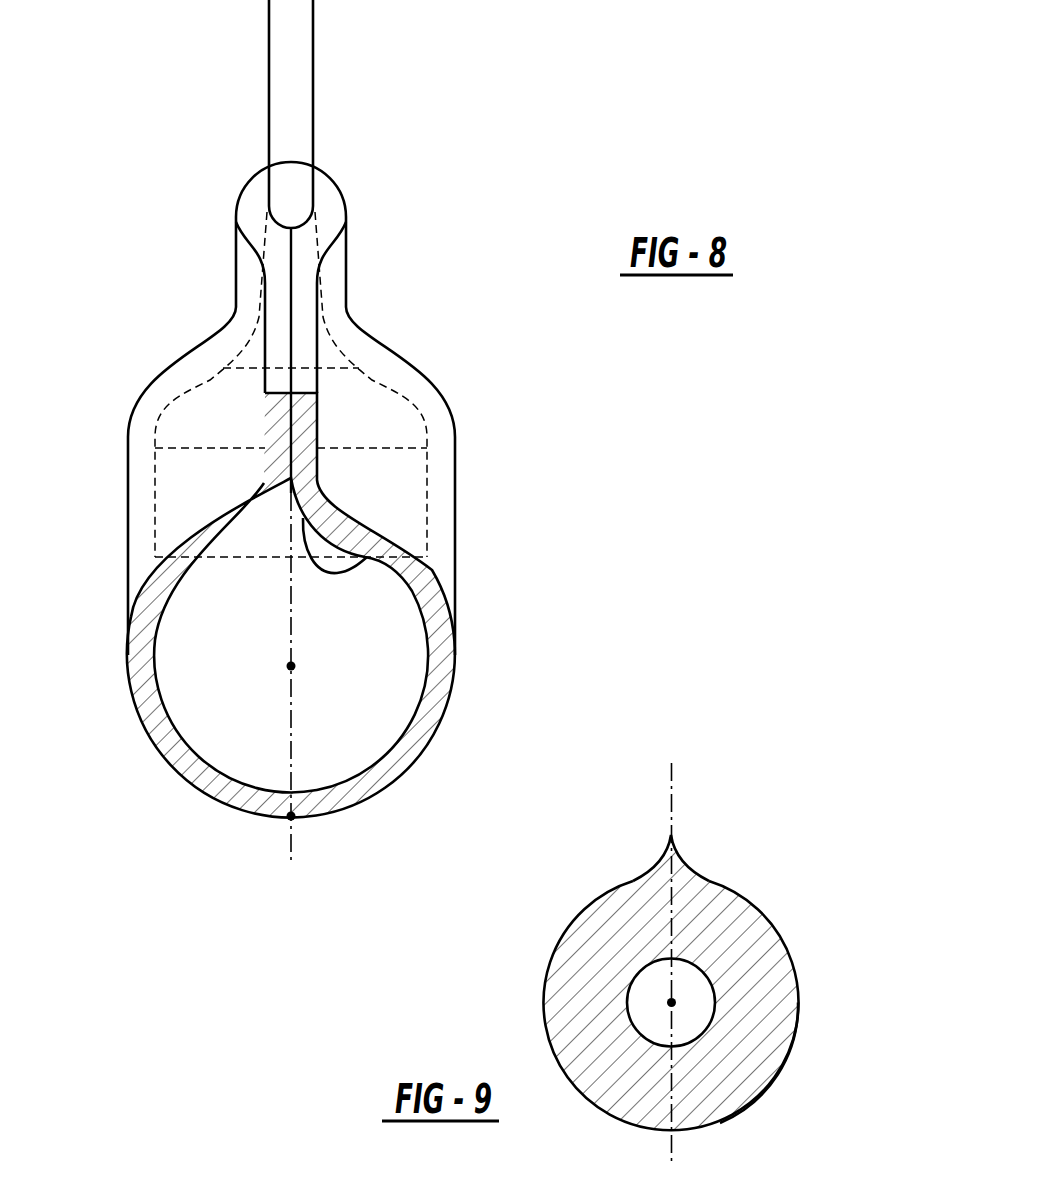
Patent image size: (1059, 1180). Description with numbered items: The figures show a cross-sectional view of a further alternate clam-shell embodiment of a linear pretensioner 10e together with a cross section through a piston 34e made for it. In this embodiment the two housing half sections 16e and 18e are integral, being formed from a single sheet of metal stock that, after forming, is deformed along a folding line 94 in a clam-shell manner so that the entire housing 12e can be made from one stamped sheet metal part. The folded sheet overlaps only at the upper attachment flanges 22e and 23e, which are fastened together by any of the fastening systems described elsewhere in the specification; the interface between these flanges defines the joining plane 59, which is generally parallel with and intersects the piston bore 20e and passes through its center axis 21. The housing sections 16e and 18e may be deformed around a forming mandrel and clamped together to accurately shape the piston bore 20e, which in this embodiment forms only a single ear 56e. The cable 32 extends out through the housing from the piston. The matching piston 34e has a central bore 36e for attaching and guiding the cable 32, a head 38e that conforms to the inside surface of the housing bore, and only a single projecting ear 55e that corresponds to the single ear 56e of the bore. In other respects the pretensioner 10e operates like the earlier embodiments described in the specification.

In FIG. 8, the linear pretensioner 10e is at (468, 318).
In FIG. 8, the housing 12e is at (442, 390).
In FIG. 8, the housing half section 16e is at (455, 467).
In FIG. 8, the housing half section 18e is at (128, 467).
In FIG. 8, the piston bore 20e is at (153, 683).
In FIG. 8, the center axis 21 is at (291, 666).
In FIG. 9, the center axis 21 is at (672, 1002).
In FIG. 8, the upper attachment flange 22e is at (327, 242).
In FIG. 8, the upper attachment flange 23e is at (236, 288).
In FIG. 8, the cable 32 is at (313, 70).
In FIG. 9, the piston 34e is at (743, 892).
In FIG. 9, the central bore 36e is at (712, 1020).
In FIG. 9, the piston head 38e is at (797, 1037).
In FIG. 9, the projecting ear 55e is at (663, 857).
In FIG. 8, the ear 56e is at (360, 560).
In FIG. 8, the joining plane 59 is at (291, 707).
In FIG. 9, the joining plane 59 is at (672, 787).
In FIG. 8, the folding line 94 is at (291, 816).